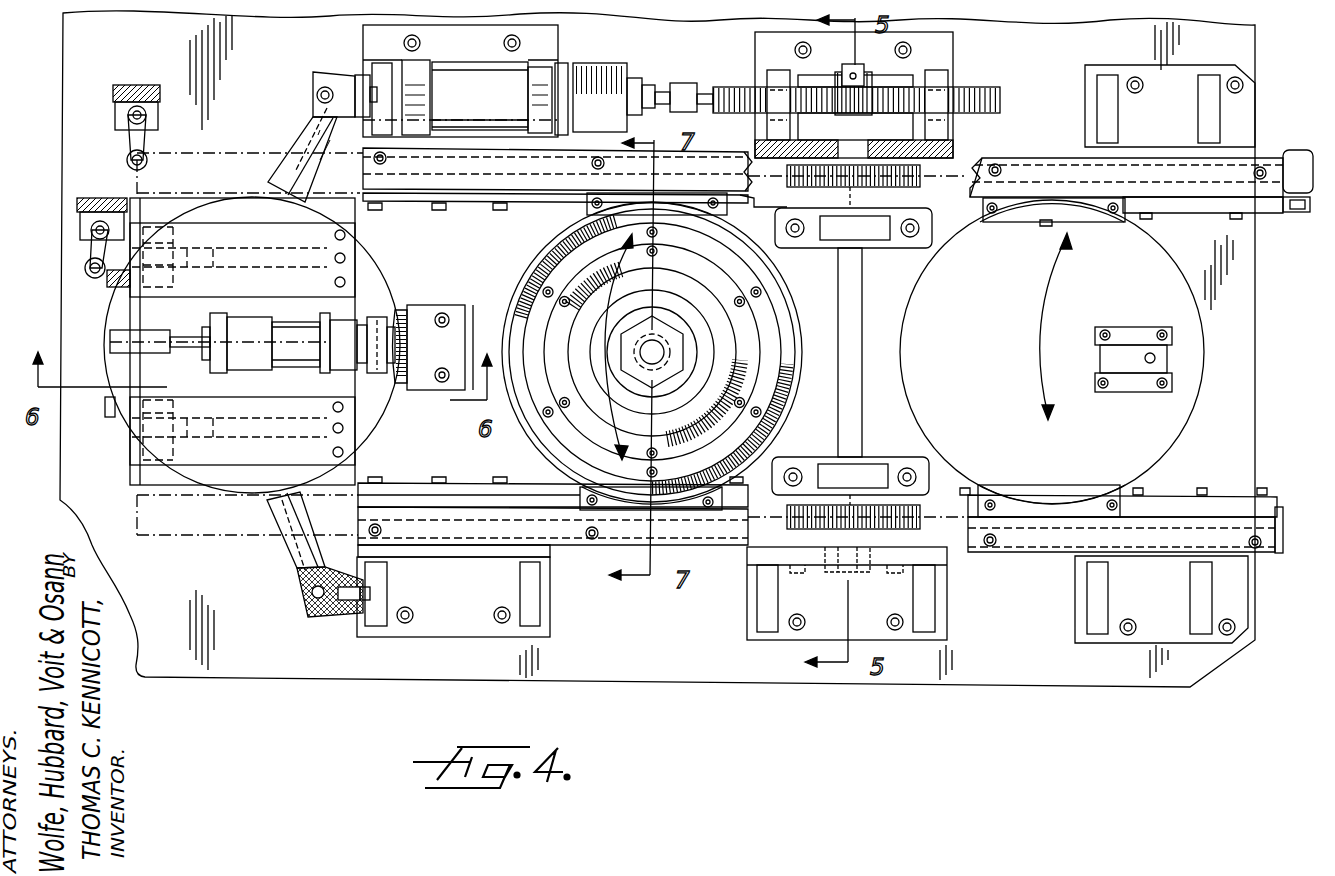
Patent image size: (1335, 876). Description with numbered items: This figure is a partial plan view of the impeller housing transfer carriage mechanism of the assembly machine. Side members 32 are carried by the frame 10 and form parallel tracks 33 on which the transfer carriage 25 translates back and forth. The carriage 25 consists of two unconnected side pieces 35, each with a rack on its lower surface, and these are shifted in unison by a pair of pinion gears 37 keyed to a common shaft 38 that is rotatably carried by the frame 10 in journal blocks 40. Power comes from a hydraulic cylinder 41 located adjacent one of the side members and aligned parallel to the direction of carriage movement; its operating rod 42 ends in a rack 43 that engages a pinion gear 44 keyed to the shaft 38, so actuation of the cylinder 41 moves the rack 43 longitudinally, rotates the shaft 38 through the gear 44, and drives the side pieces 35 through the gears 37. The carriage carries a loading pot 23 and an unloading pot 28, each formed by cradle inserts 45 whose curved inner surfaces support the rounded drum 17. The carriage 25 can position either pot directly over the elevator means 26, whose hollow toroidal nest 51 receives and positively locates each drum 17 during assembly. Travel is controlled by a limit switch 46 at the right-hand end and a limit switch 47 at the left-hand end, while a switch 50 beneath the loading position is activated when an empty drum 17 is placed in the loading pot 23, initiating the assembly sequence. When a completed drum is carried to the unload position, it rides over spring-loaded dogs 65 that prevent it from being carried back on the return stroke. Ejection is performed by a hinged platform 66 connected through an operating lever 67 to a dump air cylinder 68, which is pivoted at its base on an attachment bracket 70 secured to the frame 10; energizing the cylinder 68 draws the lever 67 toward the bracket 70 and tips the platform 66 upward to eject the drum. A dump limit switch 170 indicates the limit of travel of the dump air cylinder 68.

The frame 10 is at (300, 680).
The drum 17 is at (400, 283).
The loading pot 23 is at (1040, 298).
The transfer carriage 25 is at (202, 534).
The elevator means 26 is at (772, 330).
The unloading pot 28 is at (600, 312).
The side members 32 is at (487, 147).
The tracks 33 is at (982, 165).
The side pieces 35 is at (397, 205).
The pinion gears 37 is at (925, 172).
The shaft 38 is at (862, 360).
The journal blocks 40 is at (887, 237).
The hydraulic cylinder 41 is at (494, 106).
The operating rod 42 is at (662, 83).
The rack 43 is at (975, 96).
The pinion gear 44 is at (860, 80).
The cradle inserts 45 is at (575, 228).
The limit switch 46 is at (1298, 152).
The limit switch 47 is at (125, 128).
The switch 50 is at (1165, 356).
The nest 51 is at (740, 372).
The spring-loaded dogs 65 is at (282, 155).
The hinged platform 66 is at (278, 262).
The operating lever 67 is at (105, 280).
The dump air cylinder 68 is at (311, 352).
The attachment bracket 70 is at (445, 308).
The dump limit switch 170 is at (80, 228).